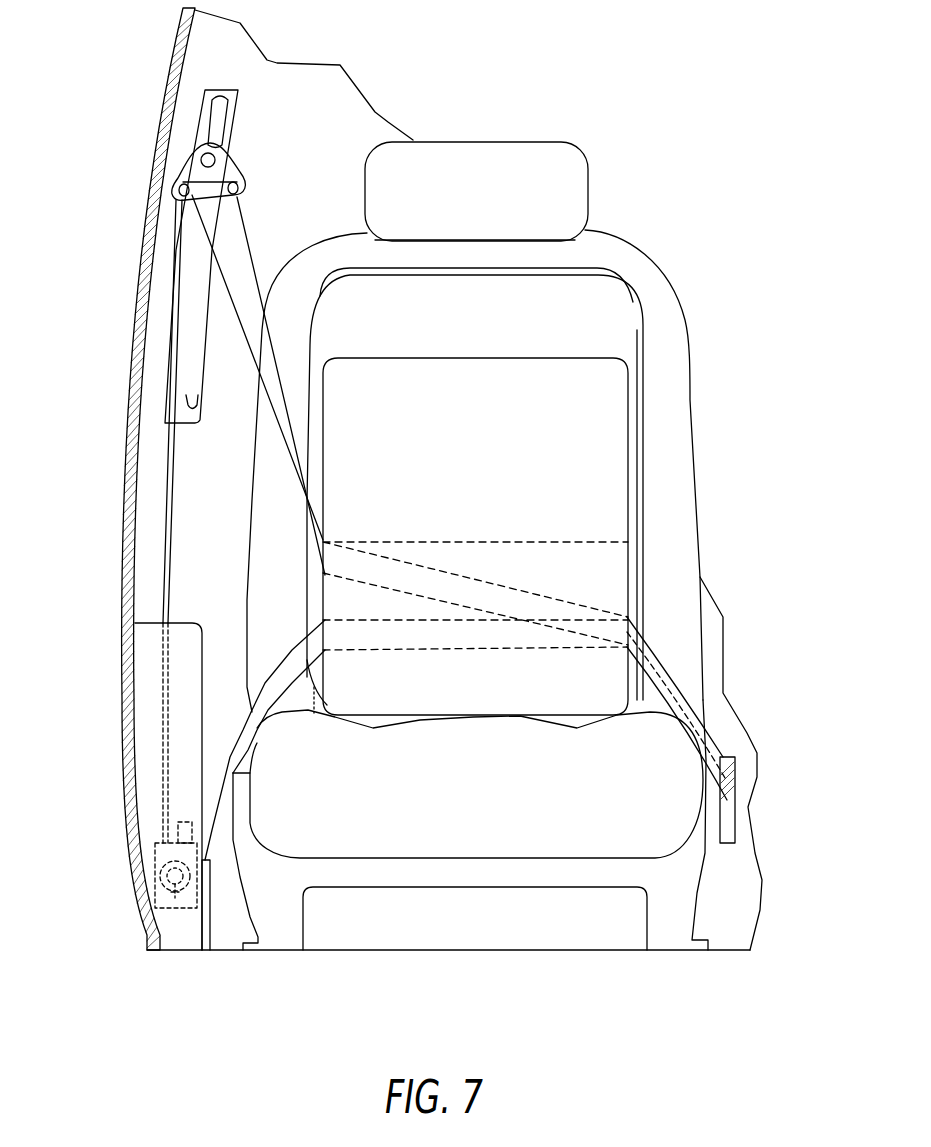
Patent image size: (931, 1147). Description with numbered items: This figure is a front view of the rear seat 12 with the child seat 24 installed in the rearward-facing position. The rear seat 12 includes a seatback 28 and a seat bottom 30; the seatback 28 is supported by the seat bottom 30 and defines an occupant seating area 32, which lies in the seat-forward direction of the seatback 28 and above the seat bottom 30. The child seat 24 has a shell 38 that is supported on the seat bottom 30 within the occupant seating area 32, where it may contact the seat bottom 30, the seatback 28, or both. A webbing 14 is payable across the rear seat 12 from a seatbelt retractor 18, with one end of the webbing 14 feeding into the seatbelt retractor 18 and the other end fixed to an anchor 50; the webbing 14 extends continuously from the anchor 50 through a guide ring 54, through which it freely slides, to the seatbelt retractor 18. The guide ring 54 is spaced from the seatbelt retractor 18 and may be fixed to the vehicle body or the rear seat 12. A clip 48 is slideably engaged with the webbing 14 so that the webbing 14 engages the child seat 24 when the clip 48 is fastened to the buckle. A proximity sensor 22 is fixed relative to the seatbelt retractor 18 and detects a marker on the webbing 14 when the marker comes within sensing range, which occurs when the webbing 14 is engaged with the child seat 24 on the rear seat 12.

The rear seat 12 is at (703, 190).
The webbing 14 is at (250, 330).
The seatbelt retractor 18 is at (156, 855).
The proximity sensor 22 is at (185, 822).
The child seat 24 is at (578, 461).
The seatback 28 is at (692, 367).
The seat bottom 30 is at (643, 823).
The occupant seating area 32 is at (655, 303).
The shell 38 is at (630, 510).
The clip 48 is at (732, 812).
The anchor 50 is at (211, 887).
The guide ring 54 is at (180, 165).